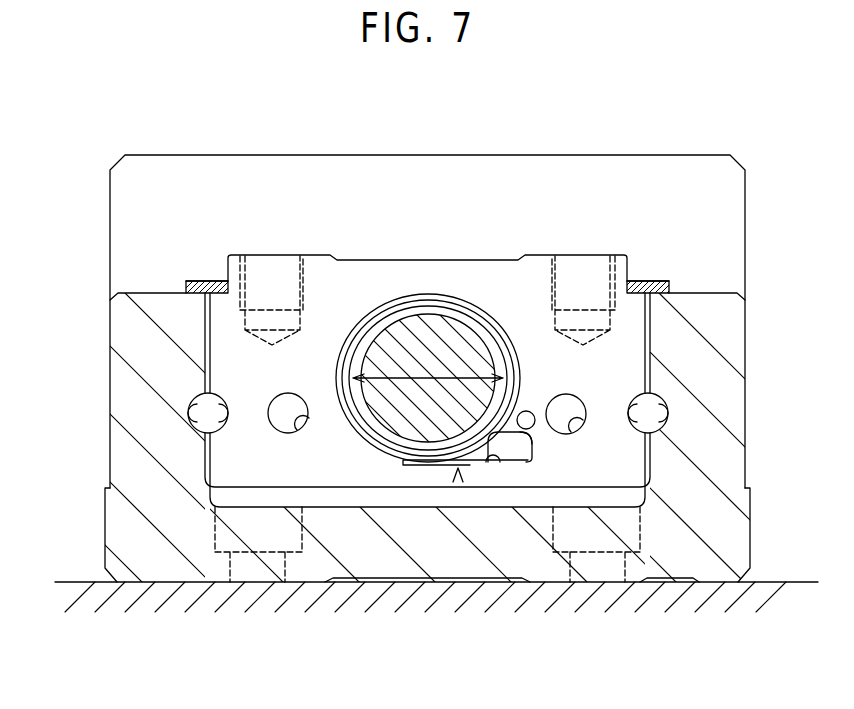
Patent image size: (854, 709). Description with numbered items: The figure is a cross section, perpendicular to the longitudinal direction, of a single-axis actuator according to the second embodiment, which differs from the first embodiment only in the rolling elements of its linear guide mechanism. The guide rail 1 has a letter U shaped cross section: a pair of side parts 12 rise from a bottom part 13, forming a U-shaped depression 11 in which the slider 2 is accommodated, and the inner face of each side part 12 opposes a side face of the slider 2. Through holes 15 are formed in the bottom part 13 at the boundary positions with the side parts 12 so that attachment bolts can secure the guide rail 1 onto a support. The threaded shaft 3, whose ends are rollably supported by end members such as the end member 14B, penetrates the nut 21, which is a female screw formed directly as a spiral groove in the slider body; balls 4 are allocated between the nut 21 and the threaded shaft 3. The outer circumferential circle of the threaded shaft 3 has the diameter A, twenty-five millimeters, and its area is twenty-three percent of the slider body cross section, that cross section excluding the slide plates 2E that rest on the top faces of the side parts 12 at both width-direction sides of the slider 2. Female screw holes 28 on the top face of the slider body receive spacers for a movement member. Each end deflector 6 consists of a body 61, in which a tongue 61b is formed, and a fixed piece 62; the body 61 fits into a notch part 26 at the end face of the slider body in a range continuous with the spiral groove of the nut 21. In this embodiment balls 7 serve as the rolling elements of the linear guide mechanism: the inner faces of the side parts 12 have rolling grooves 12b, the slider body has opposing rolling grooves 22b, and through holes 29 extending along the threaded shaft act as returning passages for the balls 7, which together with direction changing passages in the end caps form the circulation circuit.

The guide rail 1 is at (97, 337).
The slider 2 is at (353, 275).
The slide plate 2E is at (210, 325).
The threaded shaft 3 is at (450, 300).
The balls 4 is at (442, 353).
The diameter A is at (468, 376).
The end deflector 6 is at (458, 470).
The balls 7 is at (288, 403).
The U-shaped depression 11 is at (213, 281).
The side part 12 is at (120, 395).
The rolling groove 12b is at (207, 420).
The bottom part 13 is at (364, 558).
The end member 14B is at (136, 173).
The through holes 15 is at (285, 567).
The nut 21 is at (405, 462).
The rolling groove 22b is at (227, 413).
The notch part 26 is at (505, 462).
The female screw holes 28 is at (242, 277).
The through holes 29 is at (305, 418).
The body 61 is at (527, 462).
The tongue 61b is at (466, 462).
The fixed piece 62 is at (533, 447).